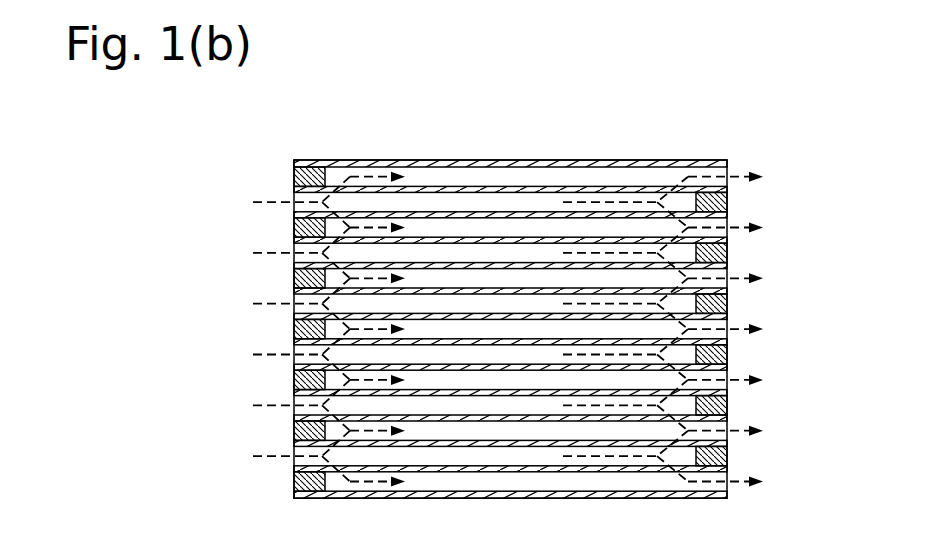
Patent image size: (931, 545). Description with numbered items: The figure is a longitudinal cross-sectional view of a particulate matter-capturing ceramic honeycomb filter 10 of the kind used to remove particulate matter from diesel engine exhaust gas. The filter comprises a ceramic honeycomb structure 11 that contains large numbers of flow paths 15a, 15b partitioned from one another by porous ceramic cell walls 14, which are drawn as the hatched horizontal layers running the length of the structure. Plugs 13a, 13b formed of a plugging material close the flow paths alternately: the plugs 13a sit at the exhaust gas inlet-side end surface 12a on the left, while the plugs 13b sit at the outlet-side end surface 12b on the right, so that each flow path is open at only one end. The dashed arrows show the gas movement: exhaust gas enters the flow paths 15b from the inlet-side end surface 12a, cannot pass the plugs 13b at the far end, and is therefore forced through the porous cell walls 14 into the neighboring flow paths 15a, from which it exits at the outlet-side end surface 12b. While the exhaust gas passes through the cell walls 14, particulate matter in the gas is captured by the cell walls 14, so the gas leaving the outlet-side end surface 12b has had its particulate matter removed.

The ceramic honeycomb filter 10 is at (266, 156).
The ceramic honeycomb structure 11 is at (383, 163).
The cell walls 14 is at (585, 188).
The flow paths 15a is at (510, 232).
The flow paths 15b is at (448, 200).
The plugs 13a is at (297, 232).
The plugs 13b is at (727, 247).
The inlet-side end surface 12a is at (293, 354).
The outlet-side end surface 12b is at (727, 285).